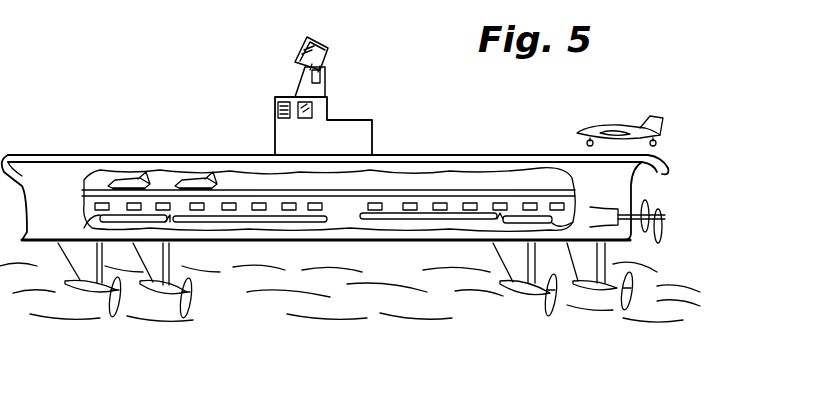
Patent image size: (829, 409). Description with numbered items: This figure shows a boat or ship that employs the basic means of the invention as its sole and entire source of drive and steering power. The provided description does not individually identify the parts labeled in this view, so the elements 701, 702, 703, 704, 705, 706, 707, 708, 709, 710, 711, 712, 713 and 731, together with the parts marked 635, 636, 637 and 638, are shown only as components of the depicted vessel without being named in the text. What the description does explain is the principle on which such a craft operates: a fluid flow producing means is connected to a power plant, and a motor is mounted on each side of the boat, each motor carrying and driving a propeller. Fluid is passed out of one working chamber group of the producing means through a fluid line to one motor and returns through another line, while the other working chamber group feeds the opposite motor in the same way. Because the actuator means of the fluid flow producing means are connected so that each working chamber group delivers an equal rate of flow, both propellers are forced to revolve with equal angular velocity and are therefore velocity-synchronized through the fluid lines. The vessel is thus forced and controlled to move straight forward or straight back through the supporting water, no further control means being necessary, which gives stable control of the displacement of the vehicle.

The hull 701 is at (58, 177).
The deck 702 is at (116, 161).
The radar antenna 703 is at (300, 52).
The superstructure island 704 is at (278, 110).
The aircraft 705 is at (592, 120).
The aircraft on deck 706 is at (127, 180).
The hangar deck opening 707 is at (507, 172).
The stern propeller 708 is at (663, 213).
The propeller shaft 709 is at (650, 200).
The conveyor track 710 is at (248, 217).
The elevator 711 is at (167, 220).
The bulkhead 712 is at (93, 220).
The water surface 713 is at (75, 287).
The storage cells 731 is at (97, 205).
The hydrofoil strut 635 is at (97, 297).
The hydrofoil pod 636 is at (345, 335).
The propeller 637 is at (107, 320).
The propeller motor 638 is at (400, 347).